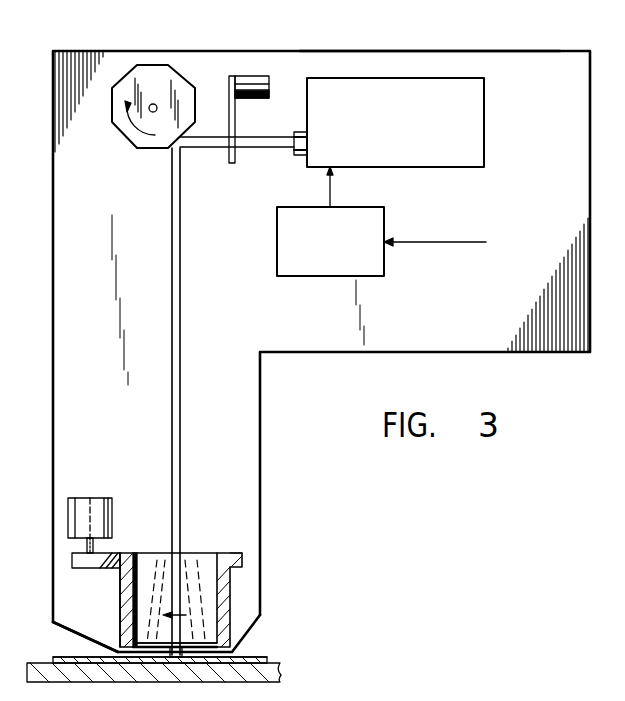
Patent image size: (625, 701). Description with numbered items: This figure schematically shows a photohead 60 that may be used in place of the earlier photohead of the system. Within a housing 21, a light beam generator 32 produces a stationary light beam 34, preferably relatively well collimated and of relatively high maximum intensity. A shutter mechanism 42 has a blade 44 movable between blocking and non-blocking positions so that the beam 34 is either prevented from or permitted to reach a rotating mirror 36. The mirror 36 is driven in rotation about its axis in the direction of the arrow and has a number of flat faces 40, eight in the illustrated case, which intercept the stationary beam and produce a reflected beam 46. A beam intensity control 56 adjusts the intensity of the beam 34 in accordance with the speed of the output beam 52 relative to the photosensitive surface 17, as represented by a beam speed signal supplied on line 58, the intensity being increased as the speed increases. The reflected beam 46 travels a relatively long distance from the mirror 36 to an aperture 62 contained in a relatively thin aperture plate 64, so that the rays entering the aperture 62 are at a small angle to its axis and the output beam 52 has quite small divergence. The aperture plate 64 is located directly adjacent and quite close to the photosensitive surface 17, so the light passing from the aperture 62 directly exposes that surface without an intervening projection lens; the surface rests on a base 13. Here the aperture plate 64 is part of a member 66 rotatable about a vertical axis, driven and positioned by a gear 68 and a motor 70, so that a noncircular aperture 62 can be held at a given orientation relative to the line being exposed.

The ground / floor 13 is at (270, 672).
The photosensitive surface 17 is at (258, 655).
The housing 21 is at (563, 51).
The light beam generator 32 is at (484, 125).
The stationary light beam 34 is at (258, 148).
The rotating mirror 36 is at (187, 85).
The flat faces 40 is at (122, 78).
The shutter mechanism 42 is at (255, 76).
The blade 44 is at (229, 128).
The reflected beam 46 is at (181, 365).
The output beam 52 is at (207, 647).
The beam intensity control 56 is at (366, 207).
The line 58 is at (447, 242).
The photohead 60 is at (458, 51).
The aperture 62 is at (167, 650).
The aperture plate 64 is at (78, 633).
The member 66 is at (232, 577).
The gear 68 is at (72, 561).
The motor 70 is at (68, 513).